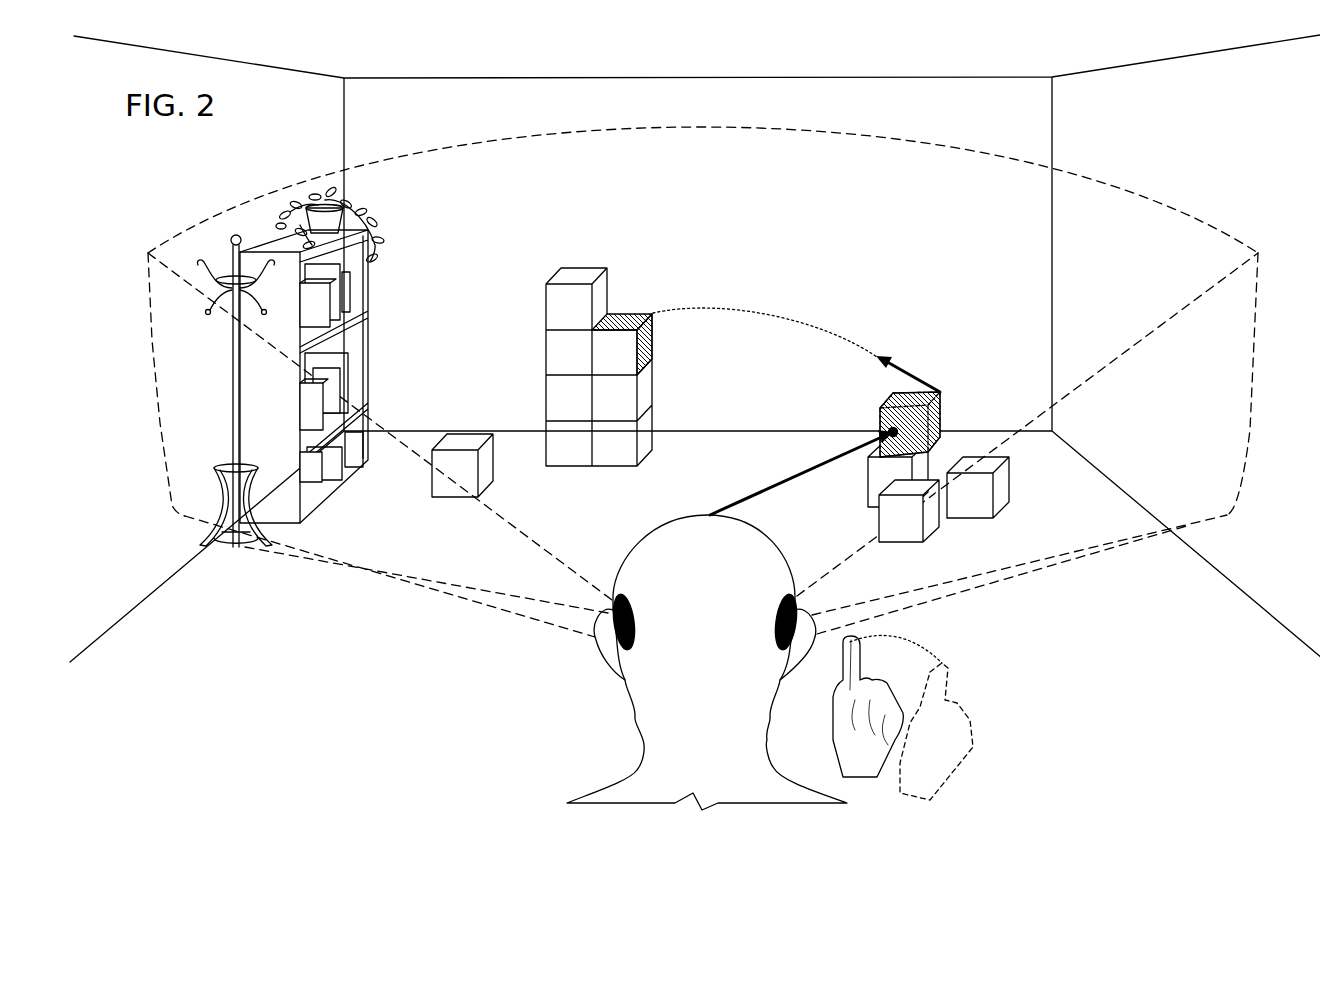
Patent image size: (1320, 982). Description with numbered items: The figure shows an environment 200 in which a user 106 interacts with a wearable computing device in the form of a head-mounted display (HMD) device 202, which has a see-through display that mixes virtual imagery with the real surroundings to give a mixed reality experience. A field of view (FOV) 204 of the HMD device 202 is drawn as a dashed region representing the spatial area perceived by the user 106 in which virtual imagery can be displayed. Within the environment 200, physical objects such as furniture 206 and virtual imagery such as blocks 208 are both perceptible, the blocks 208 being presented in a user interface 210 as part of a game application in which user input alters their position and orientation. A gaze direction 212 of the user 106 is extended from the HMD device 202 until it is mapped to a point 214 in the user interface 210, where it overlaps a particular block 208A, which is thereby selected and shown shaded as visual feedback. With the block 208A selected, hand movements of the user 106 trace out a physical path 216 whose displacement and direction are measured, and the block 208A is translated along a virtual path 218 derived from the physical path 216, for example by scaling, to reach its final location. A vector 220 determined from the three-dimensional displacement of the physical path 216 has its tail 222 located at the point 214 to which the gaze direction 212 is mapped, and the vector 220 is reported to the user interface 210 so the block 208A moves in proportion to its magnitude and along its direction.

The user 106 is at (718, 609).
The environment 200 is at (829, 93).
The head-mounted display (HMD) device 202 is at (627, 652).
The field of view (FOV) 204 is at (958, 148).
The furniture 206 is at (372, 340).
The blocks 208 is at (581, 237).
The block 208A is at (647, 340).
The user interface 210 is at (699, 183).
The gaze direction 212 is at (765, 490).
The point 214 is at (940, 440).
The physical path 216 is at (912, 641).
The virtual path 218 is at (797, 325).
The vector 220 is at (940, 391).
The tail 222 is at (941, 397).